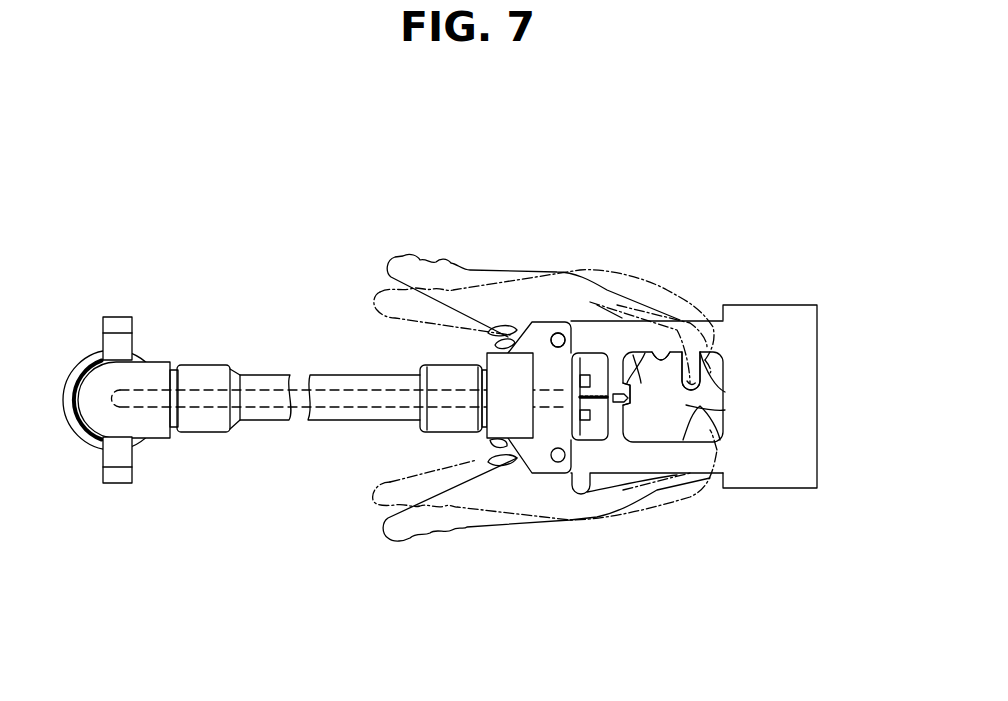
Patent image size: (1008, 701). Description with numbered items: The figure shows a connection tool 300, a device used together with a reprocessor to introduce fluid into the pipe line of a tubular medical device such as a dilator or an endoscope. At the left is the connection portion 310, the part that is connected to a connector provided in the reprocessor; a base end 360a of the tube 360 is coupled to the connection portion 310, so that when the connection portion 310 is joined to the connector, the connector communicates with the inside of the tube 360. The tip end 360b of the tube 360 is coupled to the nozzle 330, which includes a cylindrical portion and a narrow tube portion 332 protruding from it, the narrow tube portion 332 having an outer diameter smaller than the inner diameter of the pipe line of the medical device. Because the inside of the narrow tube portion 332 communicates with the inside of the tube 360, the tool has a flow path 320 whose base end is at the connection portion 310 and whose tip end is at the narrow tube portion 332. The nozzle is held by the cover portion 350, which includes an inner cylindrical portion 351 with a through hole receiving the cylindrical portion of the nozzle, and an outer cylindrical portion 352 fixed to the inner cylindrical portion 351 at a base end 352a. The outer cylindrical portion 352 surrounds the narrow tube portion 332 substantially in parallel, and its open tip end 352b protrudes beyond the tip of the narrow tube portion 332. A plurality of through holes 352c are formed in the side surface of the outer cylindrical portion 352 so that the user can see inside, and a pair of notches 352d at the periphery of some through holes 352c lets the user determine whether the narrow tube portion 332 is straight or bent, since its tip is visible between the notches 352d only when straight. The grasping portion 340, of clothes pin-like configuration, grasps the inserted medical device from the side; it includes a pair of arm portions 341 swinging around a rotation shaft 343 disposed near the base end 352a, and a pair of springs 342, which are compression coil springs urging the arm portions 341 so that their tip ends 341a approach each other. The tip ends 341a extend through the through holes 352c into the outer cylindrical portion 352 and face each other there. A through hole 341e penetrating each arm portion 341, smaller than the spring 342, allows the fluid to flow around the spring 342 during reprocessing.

The connection tool 300 is at (371, 160).
The connection portion 310 is at (87, 352).
The flow path 320 is at (267, 410).
The nozzle 330 is at (596, 390).
The narrow tube portion 332 is at (641, 355).
The grasping portion 340 is at (495, 194).
The arm portion 341 is at (458, 484).
The tip end 341a is at (697, 392).
The through hole 341e is at (710, 373).
The spring 342 is at (448, 466).
The rotation shaft 343 is at (554, 333).
The cover portion 350 is at (653, 605).
The inner cylindrical portion 351 is at (545, 426).
The outer cylindrical portion 352 is at (537, 345).
The base end 352a is at (557, 331).
The tip end 352b is at (818, 462).
The through hole 352c is at (668, 351).
The notch 352d is at (628, 403).
The tube 360 is at (265, 374).
The base end 360a is at (238, 367).
The tip end 360b is at (418, 372).